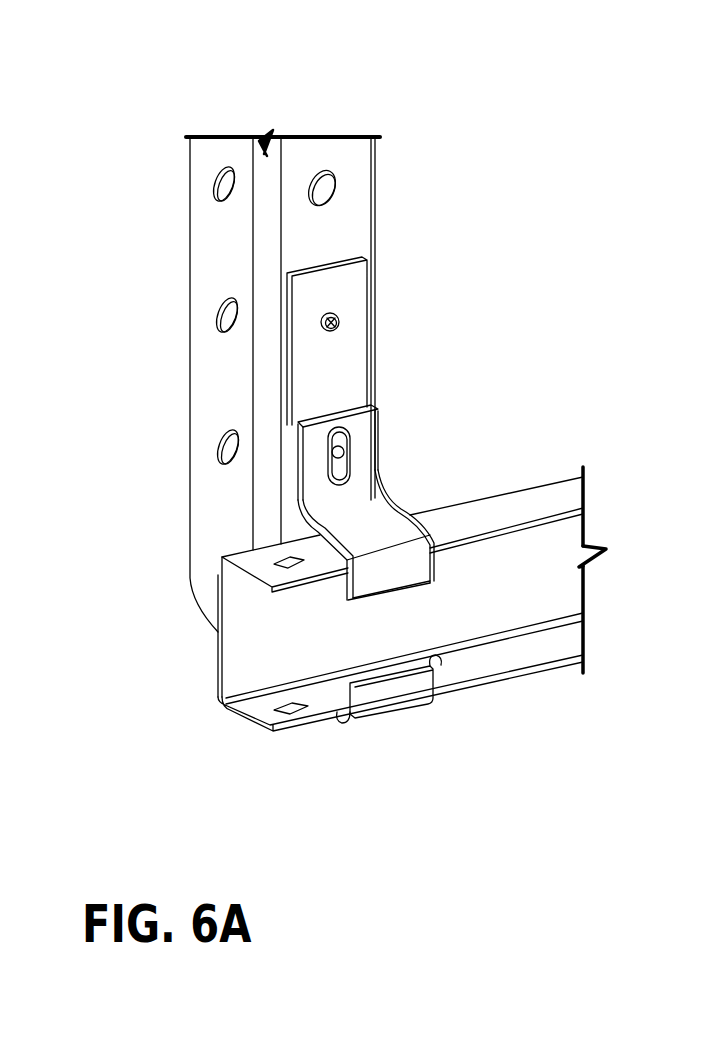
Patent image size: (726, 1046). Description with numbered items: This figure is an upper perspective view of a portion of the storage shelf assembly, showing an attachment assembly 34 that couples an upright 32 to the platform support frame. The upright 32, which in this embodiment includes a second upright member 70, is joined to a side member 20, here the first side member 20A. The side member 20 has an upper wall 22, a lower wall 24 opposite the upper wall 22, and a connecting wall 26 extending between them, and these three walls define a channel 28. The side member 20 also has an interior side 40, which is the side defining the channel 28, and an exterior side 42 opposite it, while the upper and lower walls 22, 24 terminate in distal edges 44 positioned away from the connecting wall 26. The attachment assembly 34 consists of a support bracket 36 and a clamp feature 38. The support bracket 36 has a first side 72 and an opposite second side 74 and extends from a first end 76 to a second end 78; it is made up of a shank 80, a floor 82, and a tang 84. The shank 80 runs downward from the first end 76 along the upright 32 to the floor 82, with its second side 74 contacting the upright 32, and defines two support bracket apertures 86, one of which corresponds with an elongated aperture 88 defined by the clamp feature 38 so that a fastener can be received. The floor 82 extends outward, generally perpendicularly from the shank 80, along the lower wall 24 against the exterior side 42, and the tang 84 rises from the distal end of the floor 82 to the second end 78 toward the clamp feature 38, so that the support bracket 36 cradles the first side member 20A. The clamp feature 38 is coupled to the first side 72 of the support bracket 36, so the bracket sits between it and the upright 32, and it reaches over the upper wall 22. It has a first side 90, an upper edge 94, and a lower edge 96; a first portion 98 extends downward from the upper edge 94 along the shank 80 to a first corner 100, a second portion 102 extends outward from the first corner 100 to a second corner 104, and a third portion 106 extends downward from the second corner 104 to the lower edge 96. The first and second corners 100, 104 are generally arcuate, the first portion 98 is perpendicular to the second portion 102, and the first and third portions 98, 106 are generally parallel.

The side member 20 is at (386, 600).
The first side member 20A is at (292, 680).
The upper wall 22 is at (424, 479).
The lower wall 24 is at (558, 657).
The connecting wall 26 is at (552, 593).
The channel 28 is at (545, 553).
The upright 32 is at (255, 341).
The attachment assembly 34 is at (347, 242).
The support bracket 36 is at (379, 259).
The clamp feature 38 is at (305, 556).
The interior side 40 is at (488, 600).
The exterior side 42 is at (572, 490).
The distal edges 44 is at (292, 588).
The second upright member 70 is at (198, 239).
The first side 72 is at (305, 395).
The second side 74 is at (428, 739).
The first end 76 is at (287, 244).
The second end 78 is at (437, 657).
The shank 80 is at (287, 332).
The floor 82 is at (342, 723).
The tang 84 is at (403, 688).
The support bracket aperture 86 is at (320, 325).
The elongated aperture 88 is at (362, 470).
The first side 90 is at (287, 385).
The upper edge 94 is at (310, 418).
The lower edge 96 is at (433, 643).
The first portion 98 is at (375, 407).
The first corner 100 is at (365, 497).
The second portion 102 is at (397, 518).
The second corner 104 is at (368, 590).
The third portion 106 is at (353, 600).